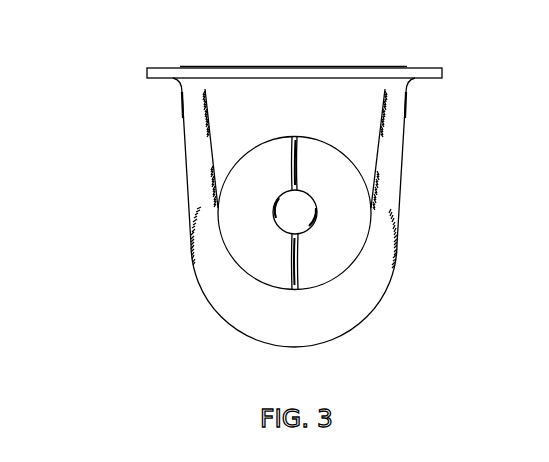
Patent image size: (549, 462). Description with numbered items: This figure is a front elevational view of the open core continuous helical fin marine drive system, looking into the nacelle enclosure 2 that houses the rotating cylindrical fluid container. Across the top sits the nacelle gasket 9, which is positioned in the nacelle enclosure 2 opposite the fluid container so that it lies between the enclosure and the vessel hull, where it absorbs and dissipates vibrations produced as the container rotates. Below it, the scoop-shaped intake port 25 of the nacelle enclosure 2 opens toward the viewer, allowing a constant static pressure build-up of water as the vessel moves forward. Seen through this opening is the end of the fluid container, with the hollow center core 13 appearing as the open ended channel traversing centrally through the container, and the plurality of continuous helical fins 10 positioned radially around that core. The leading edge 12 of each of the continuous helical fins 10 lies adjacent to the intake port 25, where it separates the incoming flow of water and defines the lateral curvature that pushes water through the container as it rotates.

The nacelle enclosure 2 is at (74, 164).
The nacelle gasket 9 is at (296, 66).
The continuous helical fins 10 is at (262, 155).
The leading edge 12 is at (297, 140).
The hollow center core 13 is at (273, 216).
The intake port 25 is at (370, 178).